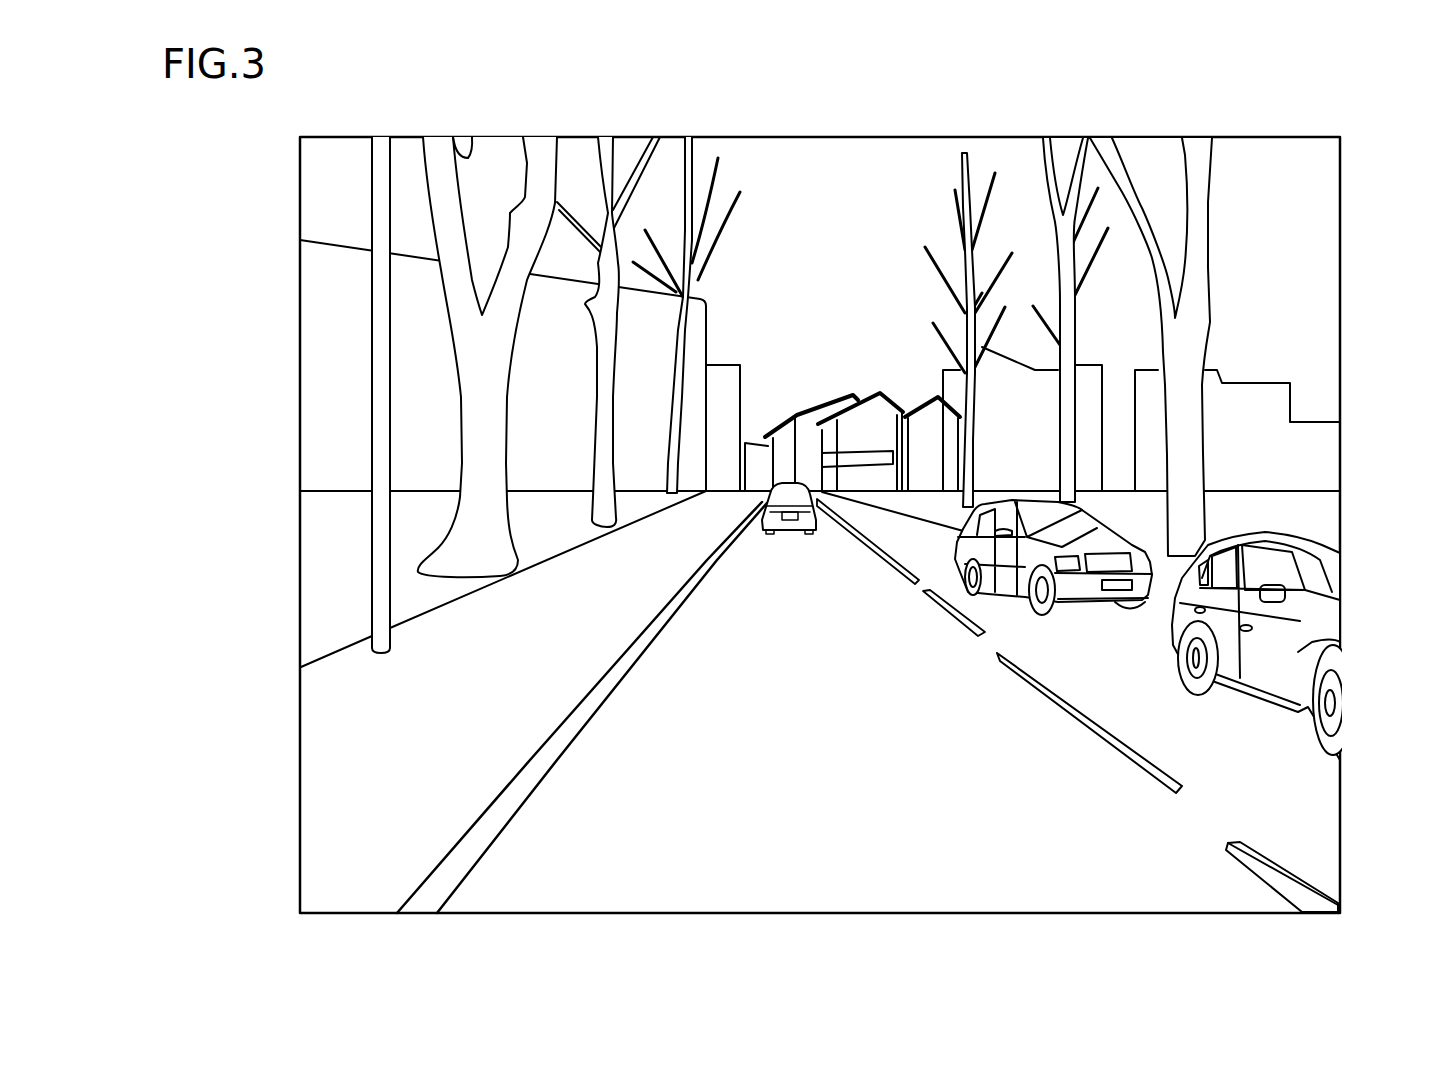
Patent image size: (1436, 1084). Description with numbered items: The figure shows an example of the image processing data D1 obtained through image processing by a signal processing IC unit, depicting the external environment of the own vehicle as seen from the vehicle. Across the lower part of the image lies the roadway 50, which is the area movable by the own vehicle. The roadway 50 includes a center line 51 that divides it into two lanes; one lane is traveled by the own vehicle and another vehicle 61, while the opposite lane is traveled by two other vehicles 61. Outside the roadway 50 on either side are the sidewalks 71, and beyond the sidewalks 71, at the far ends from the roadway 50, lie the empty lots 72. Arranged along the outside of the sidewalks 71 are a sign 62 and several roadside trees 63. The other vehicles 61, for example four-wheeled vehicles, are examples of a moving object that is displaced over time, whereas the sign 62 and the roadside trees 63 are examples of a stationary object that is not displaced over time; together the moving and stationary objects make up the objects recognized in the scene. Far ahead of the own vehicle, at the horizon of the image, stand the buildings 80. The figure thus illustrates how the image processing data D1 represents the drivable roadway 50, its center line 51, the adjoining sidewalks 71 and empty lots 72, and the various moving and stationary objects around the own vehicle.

The roadway 50 is at (955, 897).
The center line 51 is at (1305, 897).
The image processing data D1 is at (1282, 137).
The other vehicles 61 is at (792, 533).
The sign 62 is at (372, 158).
The roadside trees 63 is at (458, 158).
The sidewalks 71 is at (320, 788).
The empty lots 72 is at (320, 578).
The buildings 80 is at (317, 237).